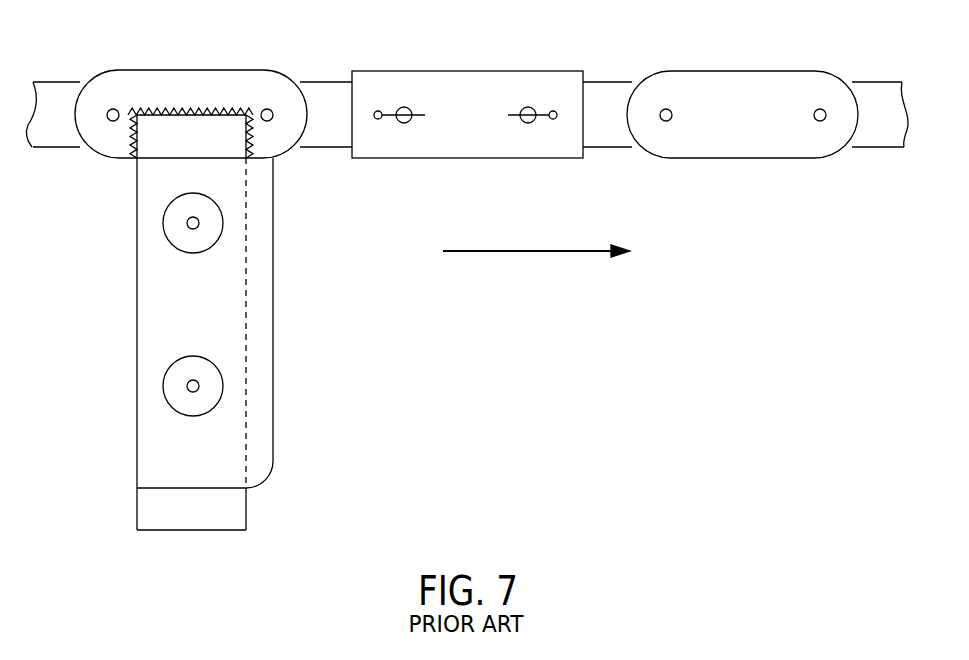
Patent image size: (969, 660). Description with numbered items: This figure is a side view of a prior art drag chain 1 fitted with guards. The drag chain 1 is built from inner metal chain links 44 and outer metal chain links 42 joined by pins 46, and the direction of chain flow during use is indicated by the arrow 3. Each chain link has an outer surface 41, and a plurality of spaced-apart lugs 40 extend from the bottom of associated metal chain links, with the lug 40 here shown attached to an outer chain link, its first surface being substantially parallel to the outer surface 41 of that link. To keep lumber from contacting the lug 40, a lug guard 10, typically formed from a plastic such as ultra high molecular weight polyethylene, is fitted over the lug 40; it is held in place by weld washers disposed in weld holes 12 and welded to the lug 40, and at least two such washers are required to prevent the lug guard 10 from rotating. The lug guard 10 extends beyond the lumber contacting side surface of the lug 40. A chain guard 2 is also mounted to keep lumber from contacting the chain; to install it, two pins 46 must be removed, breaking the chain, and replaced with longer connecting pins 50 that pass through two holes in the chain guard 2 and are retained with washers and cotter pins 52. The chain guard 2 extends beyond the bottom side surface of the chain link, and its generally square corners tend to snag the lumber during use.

The drag chain 1 is at (70, 152).
The chain guard 2 is at (472, 159).
The arrow 3 is at (530, 253).
The lug guard 10 is at (274, 330).
The weld hole 12 is at (192, 256).
The lug 40 is at (192, 130).
The outer surface 41 is at (210, 223).
The outer metal chain link 42 is at (753, 159).
The inner metal chain link 44 is at (616, 82).
The pin 46 is at (818, 109).
The longer connecting pin 50 is at (528, 107).
The cotter pin 52 is at (510, 113).